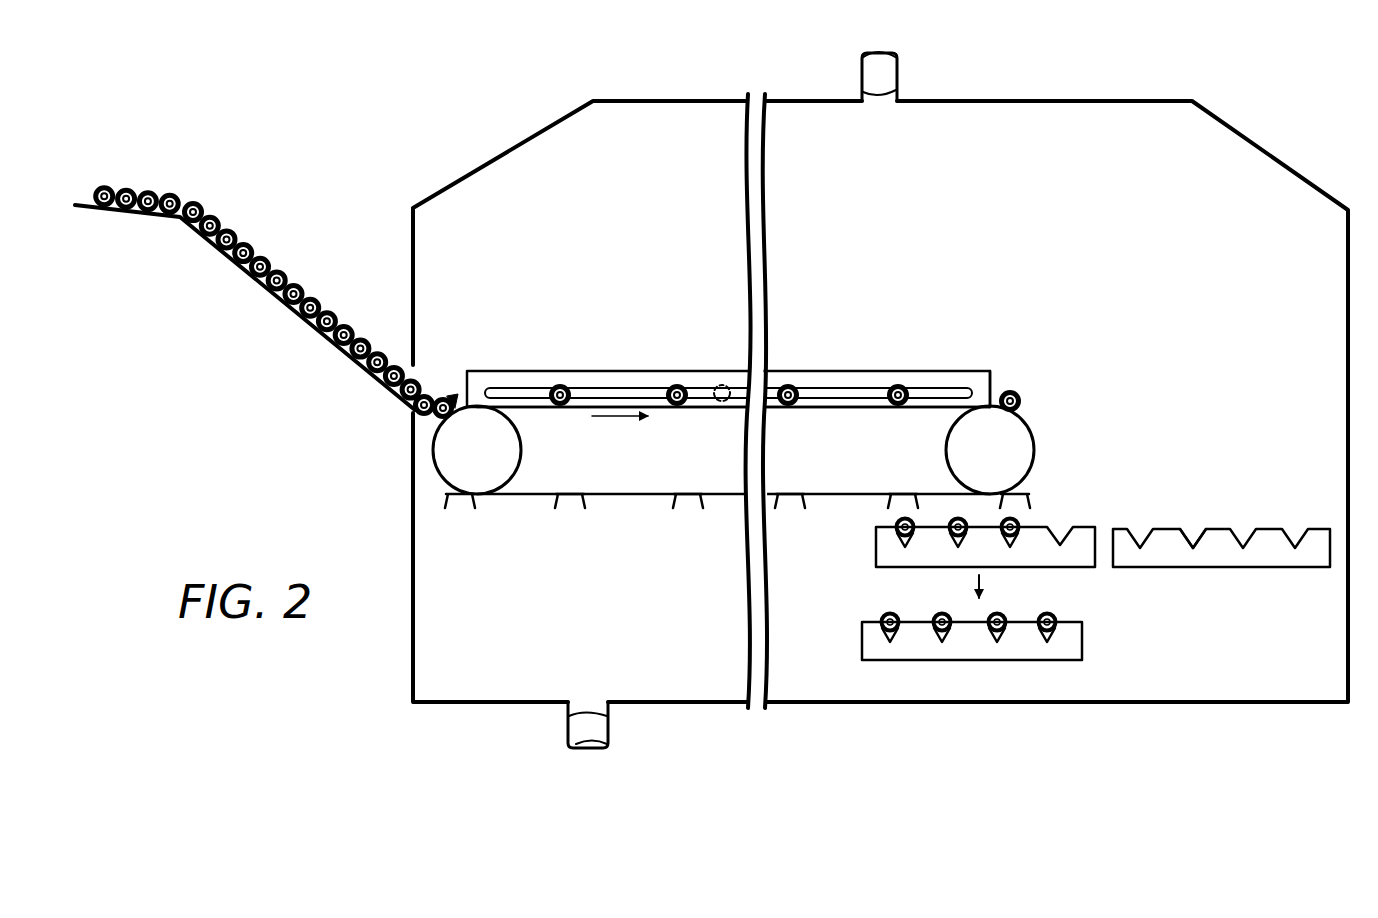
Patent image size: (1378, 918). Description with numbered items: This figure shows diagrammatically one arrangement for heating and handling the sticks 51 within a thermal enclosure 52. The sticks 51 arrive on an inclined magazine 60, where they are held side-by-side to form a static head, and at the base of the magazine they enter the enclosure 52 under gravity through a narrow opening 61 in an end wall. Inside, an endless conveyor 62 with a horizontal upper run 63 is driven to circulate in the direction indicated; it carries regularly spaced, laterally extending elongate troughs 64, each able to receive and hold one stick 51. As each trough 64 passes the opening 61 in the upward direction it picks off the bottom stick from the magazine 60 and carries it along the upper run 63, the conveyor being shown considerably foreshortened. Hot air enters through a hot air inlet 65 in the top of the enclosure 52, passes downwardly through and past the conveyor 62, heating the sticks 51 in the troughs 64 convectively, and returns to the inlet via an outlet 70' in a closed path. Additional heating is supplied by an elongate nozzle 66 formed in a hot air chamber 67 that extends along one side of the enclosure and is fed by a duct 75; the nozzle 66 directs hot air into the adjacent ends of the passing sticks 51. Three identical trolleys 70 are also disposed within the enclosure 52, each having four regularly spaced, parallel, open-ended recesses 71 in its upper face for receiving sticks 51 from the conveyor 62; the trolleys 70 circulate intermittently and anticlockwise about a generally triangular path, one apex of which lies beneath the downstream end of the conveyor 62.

The sticks 51 is at (307, 290).
The thermal enclosure 52 is at (636, 97).
The inclined magazine 60 is at (300, 321).
The narrow opening 61 is at (410, 415).
The endless conveyor 62 is at (637, 500).
The horizontal upper run 63 is at (611, 405).
The elongate troughs 64 is at (470, 497).
The hot air inlet 65 is at (885, 81).
The elongate nozzle 66 is at (947, 393).
The hot air chamber 67 is at (981, 378).
The trolleys 70 is at (1071, 639).
The outlet 70' is at (617, 728).
The open-ended recesses 71 is at (1195, 532).
The duct 75 is at (722, 380).